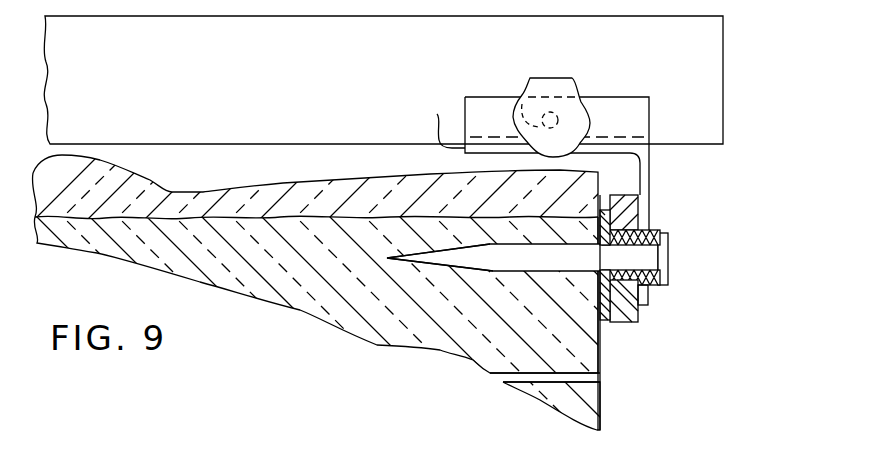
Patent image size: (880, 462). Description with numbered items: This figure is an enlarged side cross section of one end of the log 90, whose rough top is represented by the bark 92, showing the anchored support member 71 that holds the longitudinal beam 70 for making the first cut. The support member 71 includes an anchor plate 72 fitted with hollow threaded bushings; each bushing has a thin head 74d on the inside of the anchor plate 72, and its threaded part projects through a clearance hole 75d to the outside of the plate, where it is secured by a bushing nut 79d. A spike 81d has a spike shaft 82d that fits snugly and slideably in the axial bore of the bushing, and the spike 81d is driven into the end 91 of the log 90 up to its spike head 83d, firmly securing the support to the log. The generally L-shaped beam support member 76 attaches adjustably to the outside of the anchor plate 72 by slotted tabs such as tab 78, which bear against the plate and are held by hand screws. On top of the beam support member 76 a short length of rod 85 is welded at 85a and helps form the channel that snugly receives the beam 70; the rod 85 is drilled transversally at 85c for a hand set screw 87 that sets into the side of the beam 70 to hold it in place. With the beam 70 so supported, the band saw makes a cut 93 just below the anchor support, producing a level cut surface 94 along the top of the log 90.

The longitudinal beam 70 is at (725, 17).
The anchored support member 71 is at (735, 119).
The anchor plate 72 is at (642, 323).
The bushing head 74d is at (605, 321).
The clearance hole 75d is at (641, 214).
The beam support member 76 is at (676, 167).
The slotted tab 78 is at (646, 313).
The bushing nut 79d is at (657, 287).
The spike 81d is at (399, 262).
The spike shaft 82d is at (525, 271).
The spike head 83d is at (668, 240).
The rod 85 is at (608, 98).
The weld 85a is at (650, 137).
The transverse drilled hole 85c is at (523, 97).
The hand set screw 87 is at (553, 78).
The log 90 is at (367, 313).
The end of log 91 is at (600, 412).
The bark 92 is at (122, 166).
The cut 93 is at (488, 374).
The level cut surface 94 is at (567, 373).